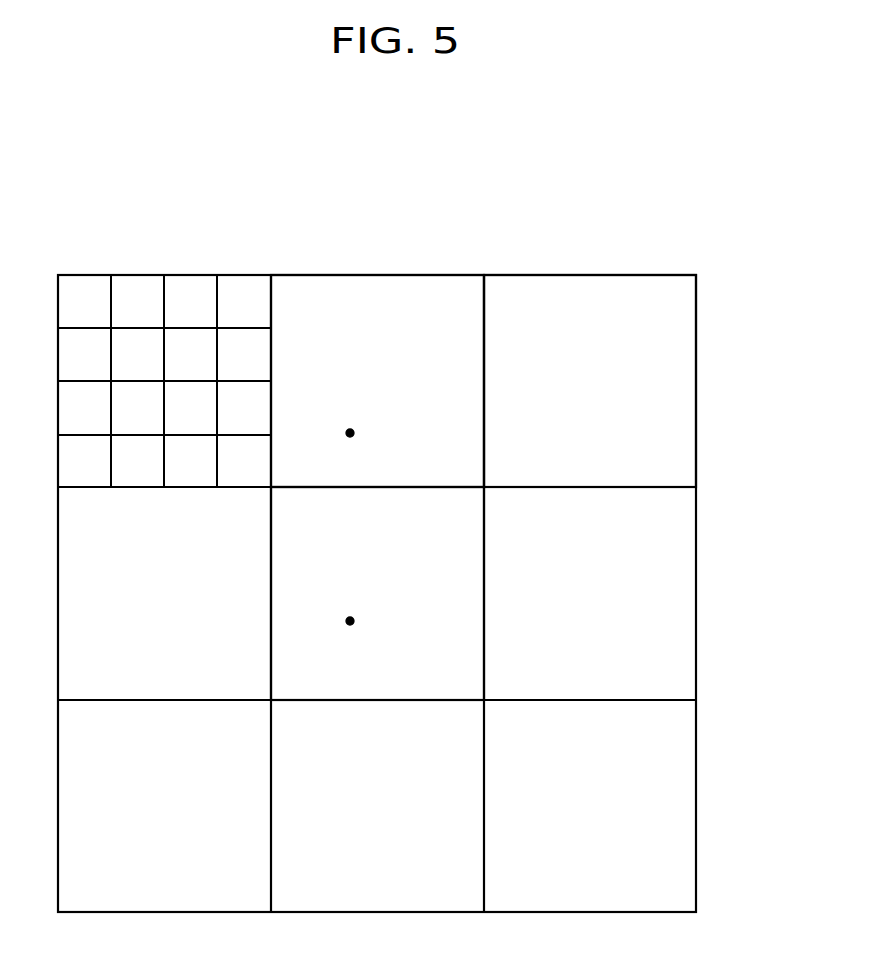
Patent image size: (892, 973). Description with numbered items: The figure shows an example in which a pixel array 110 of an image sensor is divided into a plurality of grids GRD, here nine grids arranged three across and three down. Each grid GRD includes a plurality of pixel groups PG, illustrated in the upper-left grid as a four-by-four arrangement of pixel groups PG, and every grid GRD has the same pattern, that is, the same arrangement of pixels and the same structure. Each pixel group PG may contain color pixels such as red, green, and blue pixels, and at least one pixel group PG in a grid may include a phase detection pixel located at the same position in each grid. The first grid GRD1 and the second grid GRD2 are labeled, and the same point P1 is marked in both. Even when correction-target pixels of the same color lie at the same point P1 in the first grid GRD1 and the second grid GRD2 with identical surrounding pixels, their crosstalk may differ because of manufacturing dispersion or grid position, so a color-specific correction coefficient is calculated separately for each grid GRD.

The pixel array 110 is at (724, 247).
The grid GRD is at (591, 288).
The first grid GRD1 is at (345, 318).
The second grid GRD2 is at (345, 531).
The point P1 is at (353, 430).
The pixel group PG is at (164, 381).